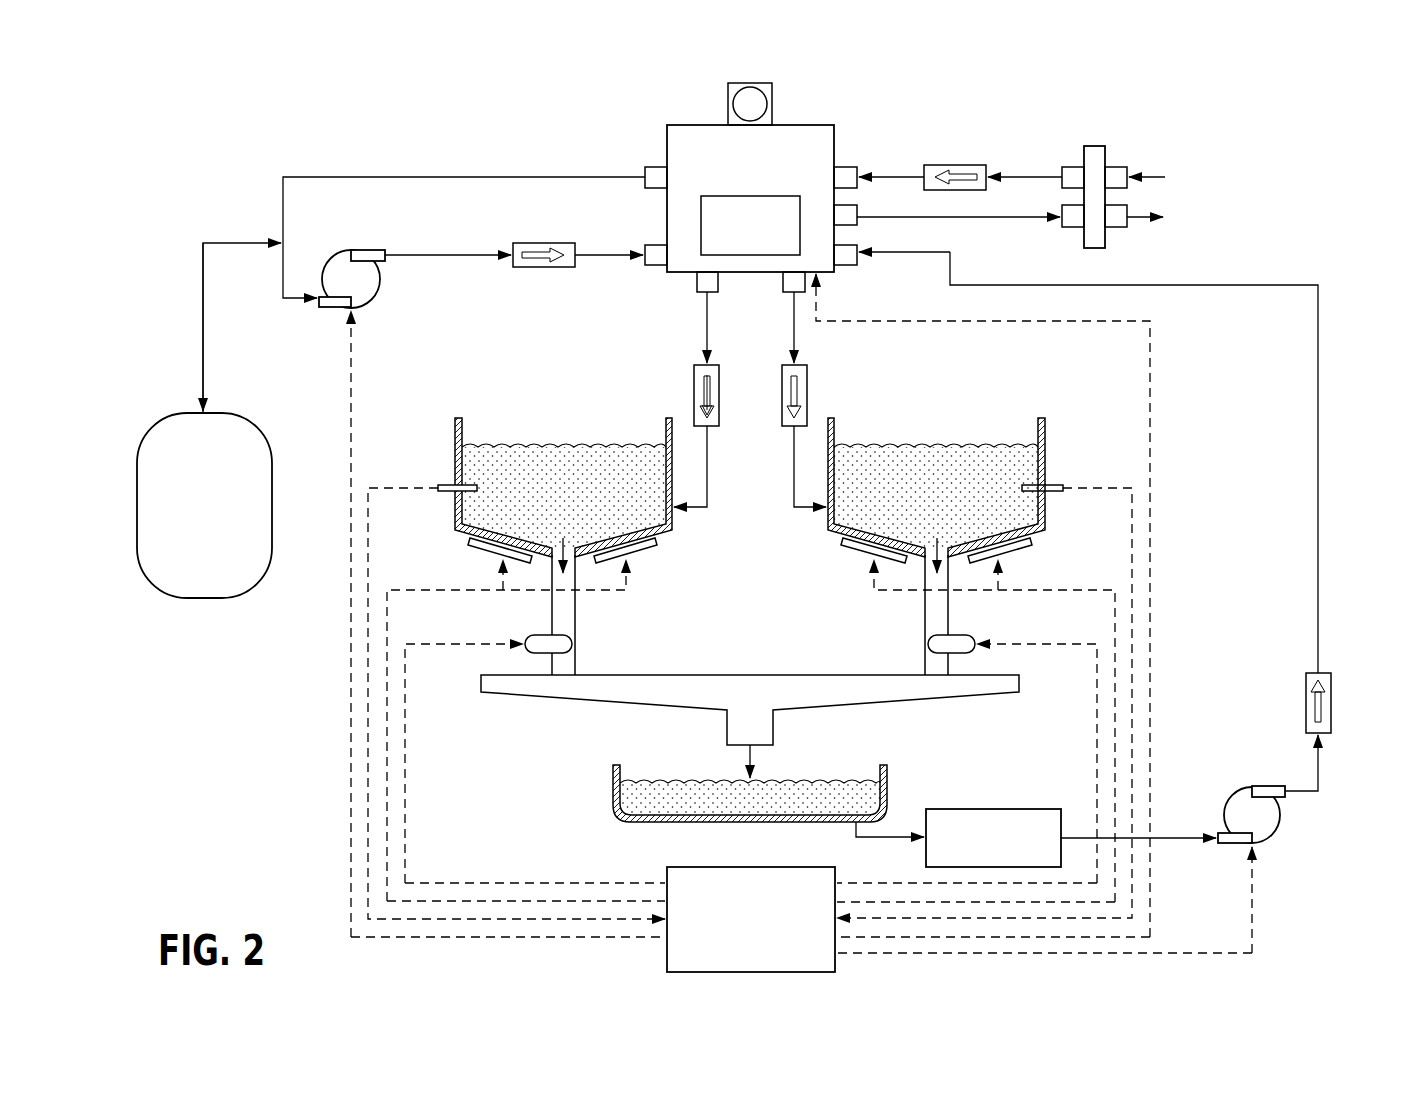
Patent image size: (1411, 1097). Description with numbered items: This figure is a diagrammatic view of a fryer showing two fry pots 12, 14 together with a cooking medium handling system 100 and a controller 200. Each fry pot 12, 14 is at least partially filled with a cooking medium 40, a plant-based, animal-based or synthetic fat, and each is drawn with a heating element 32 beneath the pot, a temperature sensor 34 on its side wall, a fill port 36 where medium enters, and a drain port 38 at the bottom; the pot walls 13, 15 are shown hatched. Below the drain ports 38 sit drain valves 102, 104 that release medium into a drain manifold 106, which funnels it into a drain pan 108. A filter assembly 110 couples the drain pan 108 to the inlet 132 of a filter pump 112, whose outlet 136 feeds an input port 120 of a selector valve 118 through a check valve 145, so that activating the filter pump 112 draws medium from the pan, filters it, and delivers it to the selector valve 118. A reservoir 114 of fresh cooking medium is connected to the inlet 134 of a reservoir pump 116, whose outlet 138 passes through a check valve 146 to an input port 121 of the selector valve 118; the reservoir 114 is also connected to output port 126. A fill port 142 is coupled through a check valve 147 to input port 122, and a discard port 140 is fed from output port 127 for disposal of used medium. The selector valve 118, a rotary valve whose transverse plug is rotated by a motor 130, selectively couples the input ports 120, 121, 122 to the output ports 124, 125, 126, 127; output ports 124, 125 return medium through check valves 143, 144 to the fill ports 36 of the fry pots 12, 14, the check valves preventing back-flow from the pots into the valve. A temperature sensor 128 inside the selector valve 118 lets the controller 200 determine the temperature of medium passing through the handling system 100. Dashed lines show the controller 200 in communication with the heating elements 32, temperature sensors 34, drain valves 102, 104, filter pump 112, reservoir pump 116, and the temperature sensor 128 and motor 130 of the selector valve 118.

The cooking medium handling system 100 is at (240, 146).
The fry pot 12 is at (750, 644).
The first vat wall 13 is at (462, 430).
The fry pot 14 is at (936, 460).
The second vat wall 15 is at (1039, 430).
The heating element 32 is at (655, 548).
The temperature sensor 34 is at (440, 486).
The fill port 36 is at (666, 502).
The drain port 38 is at (560, 552).
The cooking medium 40 is at (714, 496).
The drain valve 102 is at (567, 636).
The drain valve 104 is at (932, 636).
The drain manifold 106 is at (495, 692).
The drain pan 108 is at (613, 775).
The filter assembly 110 is at (1018, 809).
The filter pump 112 is at (1083, 855).
The reservoir 114 is at (240, 415).
The reservoir pump 116 is at (345, 279).
The selector valve 118 is at (682, 125).
The input port 120 is at (849, 268).
The input port 121 is at (645, 265).
The input port 122 is at (857, 170).
The output port 124 is at (700, 292).
The output port 125 is at (786, 292).
The output port 126 is at (645, 170).
The output port 127 is at (861, 224).
The temperature sensor 128 is at (701, 220).
The motor 130 is at (728, 96).
The inlet 132 is at (1222, 843).
The inlet 134 is at (322, 307).
The outlet 136 is at (1278, 786).
The outlet 138 is at (378, 250).
The discard port 140 is at (1120, 227).
The fill port 142 is at (1122, 167).
The check valve 143 is at (694, 395).
The check valve 144 is at (807, 395).
The check valve 145 is at (1331, 703).
The check valve 146 is at (520, 267).
The check valve 147 is at (972, 165).
The controller 200 is at (667, 877).